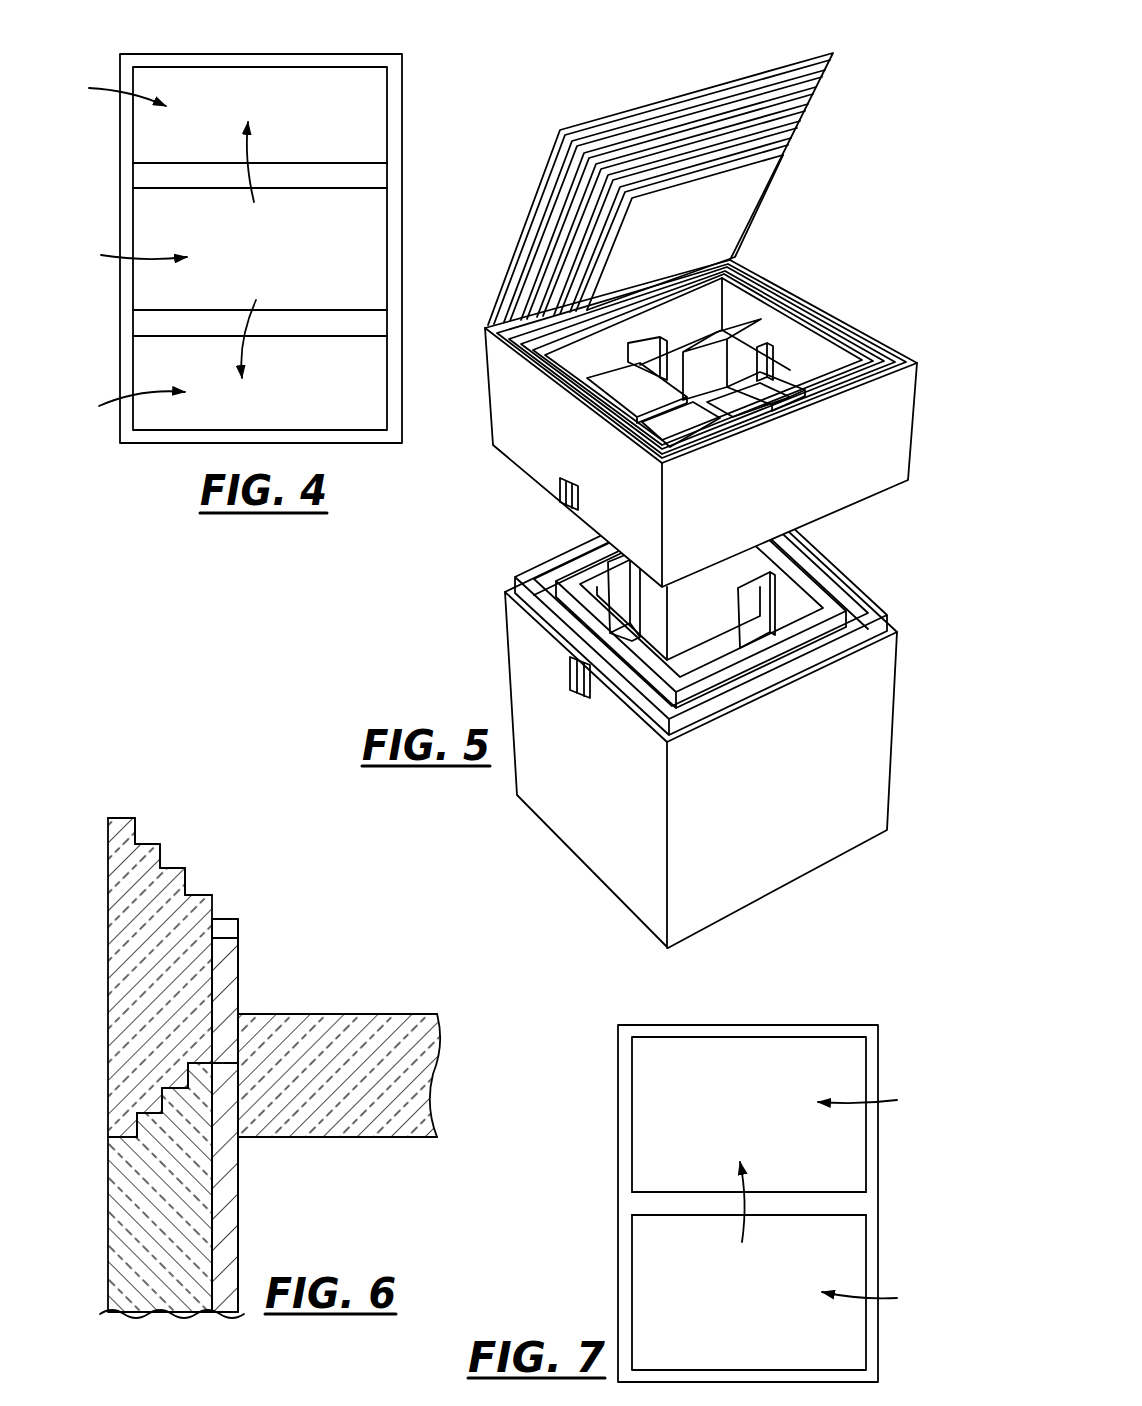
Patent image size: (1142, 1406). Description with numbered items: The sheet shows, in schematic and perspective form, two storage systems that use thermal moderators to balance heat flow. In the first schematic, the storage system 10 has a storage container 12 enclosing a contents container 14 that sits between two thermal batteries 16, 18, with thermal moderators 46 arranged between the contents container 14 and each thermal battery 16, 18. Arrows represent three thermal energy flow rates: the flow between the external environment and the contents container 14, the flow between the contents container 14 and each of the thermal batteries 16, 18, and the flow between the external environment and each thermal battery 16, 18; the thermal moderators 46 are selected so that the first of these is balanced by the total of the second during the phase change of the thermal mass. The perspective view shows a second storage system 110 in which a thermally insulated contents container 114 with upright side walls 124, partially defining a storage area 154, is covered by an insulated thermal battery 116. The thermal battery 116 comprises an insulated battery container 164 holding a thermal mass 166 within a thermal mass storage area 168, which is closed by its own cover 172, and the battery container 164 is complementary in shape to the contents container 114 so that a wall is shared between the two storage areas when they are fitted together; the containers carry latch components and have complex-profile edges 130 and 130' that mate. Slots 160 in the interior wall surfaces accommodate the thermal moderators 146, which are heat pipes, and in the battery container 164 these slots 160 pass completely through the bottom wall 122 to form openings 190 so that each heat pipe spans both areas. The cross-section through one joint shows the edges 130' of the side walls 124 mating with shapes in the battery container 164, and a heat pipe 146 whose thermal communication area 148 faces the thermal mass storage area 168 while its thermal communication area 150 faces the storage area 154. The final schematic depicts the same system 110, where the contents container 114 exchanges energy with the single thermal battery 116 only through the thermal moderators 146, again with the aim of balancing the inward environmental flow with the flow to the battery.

In FIG. 4, the storage system 10 is at (259, 228).
In FIG. 4, the storage container 12 is at (181, 59).
In FIG. 4, the contents container 14 is at (360, 245).
In FIG. 4, the thermal battery 16 is at (364, 108).
In FIG. 4, the thermal battery 18 is at (348, 392).
In FIG. 4, the thermal moderators 46 is at (148, 176).
In FIG. 5, the storage system 110 is at (691, 487).
In FIG. 7, the storage system 110 is at (782, 1171).
In FIG. 5, the contents container 114 is at (691, 710).
In FIG. 6, the contents container 114 is at (106, 1207).
In FIG. 7, the contents container 114 is at (847, 1245).
In FIG. 5, the thermal battery 116 is at (698, 379).
In FIG. 6, the thermal battery 116 is at (108, 973).
In FIG. 7, the thermal battery 116 is at (840, 1155).
In FIG. 6, the bottom wall 122 is at (217, 1084).
In FIG. 5, the side walls 124 is at (522, 643).
In FIG. 6, the side walls 124 is at (133, 1187).
In FIG. 5, the edges 130 is at (684, 314).
In FIG. 5, the edges 130' is at (674, 603).
In FIG. 6, the edges 130' is at (127, 1100).
In FIG. 5, the thermal moderators 146 is at (797, 612).
In FIG. 6, the thermal moderators 146 is at (232, 998).
In FIG. 7, the thermal moderators 146 is at (848, 1205).
In FIG. 6, the thermal communication area 148 is at (236, 963).
In FIG. 6, the thermal communication area 150 is at (236, 1224).
In FIG. 5, the storage area 154 is at (763, 600).
In FIG. 6, the storage area 154 is at (310, 1154).
In FIG. 5, the slots 160 is at (773, 358).
In FIG. 6, the slots 160 is at (213, 940).
In FIG. 5, the battery container 164 is at (787, 290).
In FIG. 6, the battery container 164 is at (108, 845).
In FIG. 5, the thermal mass 166 is at (773, 390).
In FIG. 5, the thermal mass storage area 168 is at (678, 348).
In FIG. 6, the thermal mass storage area 168 is at (359, 973).
In FIG. 5, the cover 172 is at (731, 84).
In FIG. 6, the openings 190 is at (217, 1135).